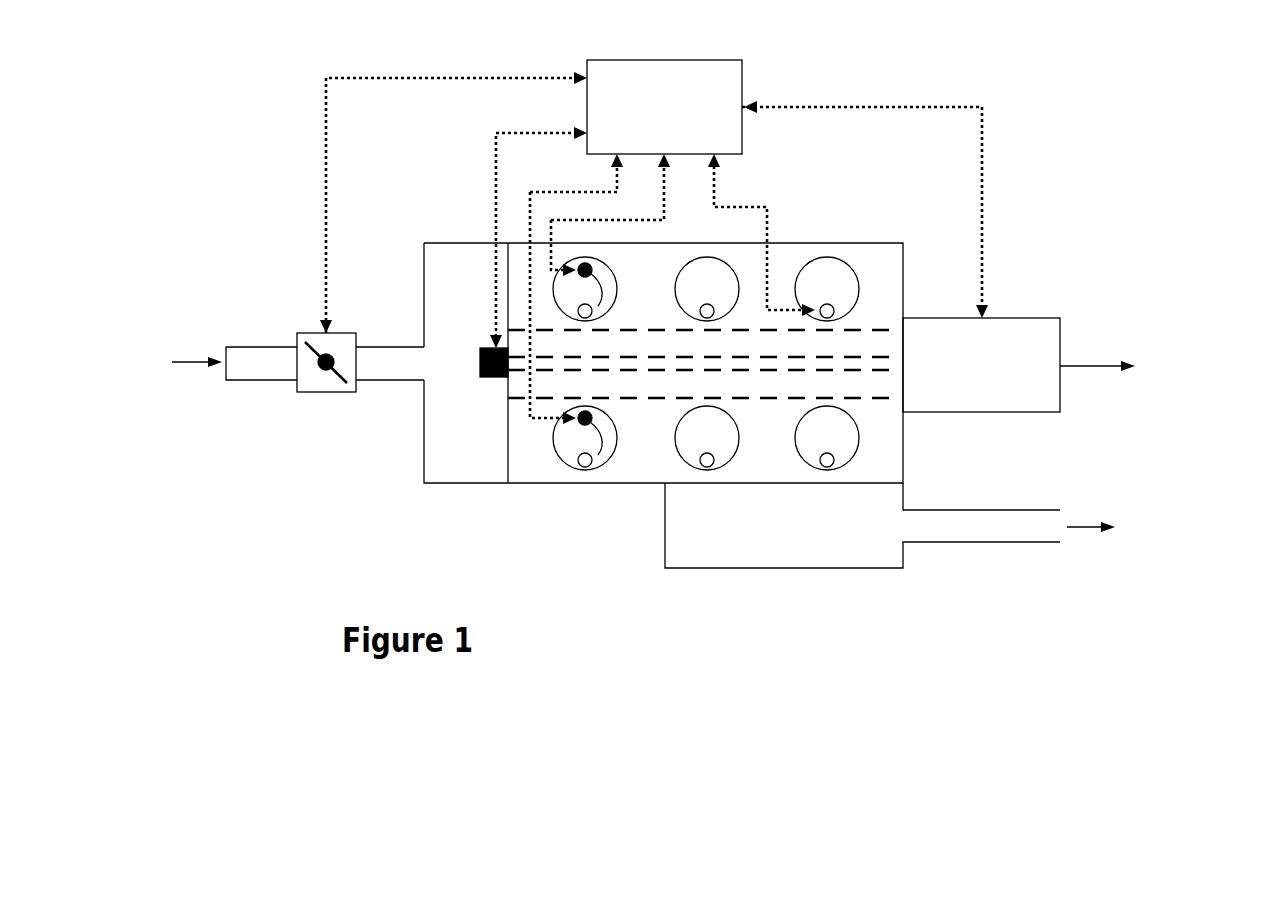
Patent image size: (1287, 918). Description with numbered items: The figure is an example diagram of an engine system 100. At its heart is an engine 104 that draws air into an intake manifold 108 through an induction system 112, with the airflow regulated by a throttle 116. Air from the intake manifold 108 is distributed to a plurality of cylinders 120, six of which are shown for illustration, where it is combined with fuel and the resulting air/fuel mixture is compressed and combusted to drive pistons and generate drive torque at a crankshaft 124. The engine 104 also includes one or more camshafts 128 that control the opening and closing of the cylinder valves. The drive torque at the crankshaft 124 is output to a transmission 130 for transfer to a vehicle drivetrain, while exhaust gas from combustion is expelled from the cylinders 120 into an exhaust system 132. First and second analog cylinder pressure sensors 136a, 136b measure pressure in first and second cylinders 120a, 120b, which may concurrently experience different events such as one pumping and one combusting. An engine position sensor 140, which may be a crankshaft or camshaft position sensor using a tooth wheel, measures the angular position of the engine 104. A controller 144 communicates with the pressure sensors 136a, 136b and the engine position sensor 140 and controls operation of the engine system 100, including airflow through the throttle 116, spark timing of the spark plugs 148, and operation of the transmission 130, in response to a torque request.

The engine system 100 is at (1082, 62).
The engine 104 is at (541, 483).
The intake manifold 108 is at (466, 483).
The induction system 112 is at (247, 380).
The throttle 116 is at (326, 392).
The cylinders 120 is at (827, 257).
The first cylinder 120a is at (618, 288).
The second cylinder 120b is at (618, 438).
The crankshaft 124 is at (703, 384).
The camshafts 128 is at (703, 343).
The transmission 130 is at (980, 412).
The exhaust system 132 is at (903, 560).
The first analog cylinder pressure sensor 136a is at (605, 312).
The second analog cylinder pressure sensor 136b is at (605, 461).
The engine position sensor 140 is at (494, 377).
The controller 144 is at (662, 60).
The spark plugs 148 is at (827, 467).